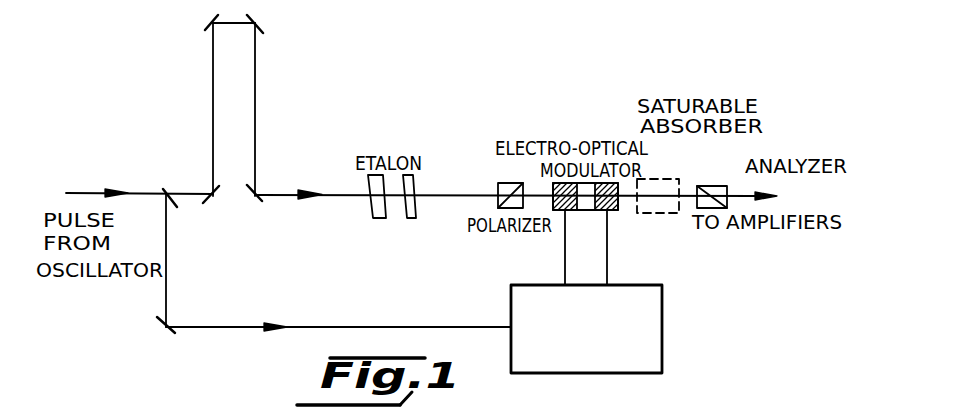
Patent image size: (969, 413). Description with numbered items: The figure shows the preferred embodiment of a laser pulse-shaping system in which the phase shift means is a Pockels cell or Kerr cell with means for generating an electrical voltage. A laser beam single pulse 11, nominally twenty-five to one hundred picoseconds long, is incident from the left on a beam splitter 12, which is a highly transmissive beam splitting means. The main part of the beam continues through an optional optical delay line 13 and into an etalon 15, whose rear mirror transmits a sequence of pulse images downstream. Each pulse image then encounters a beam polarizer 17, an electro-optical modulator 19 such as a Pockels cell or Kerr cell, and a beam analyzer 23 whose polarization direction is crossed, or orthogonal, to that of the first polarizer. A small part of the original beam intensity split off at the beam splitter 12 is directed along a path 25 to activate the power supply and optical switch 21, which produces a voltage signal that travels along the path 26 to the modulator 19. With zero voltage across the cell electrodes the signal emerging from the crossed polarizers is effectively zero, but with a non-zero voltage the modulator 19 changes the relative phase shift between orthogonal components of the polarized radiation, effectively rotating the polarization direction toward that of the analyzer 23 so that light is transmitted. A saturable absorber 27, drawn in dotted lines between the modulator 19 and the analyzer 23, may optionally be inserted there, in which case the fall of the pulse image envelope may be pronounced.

The laser beam single pulse 11 is at (78, 193).
The beam splitter 12 is at (165, 193).
The optical delay line 13 is at (256, 96).
The etalon 15 is at (408, 218).
The beam polarizer 17 is at (498, 186).
The electro-optical modulator 19 is at (570, 210).
The power supply and optical switch 21 is at (592, 373).
The beam analyzer 23 is at (707, 182).
The path 25 is at (323, 327).
The path 26 is at (565, 261).
The saturable absorber 27 is at (652, 177).